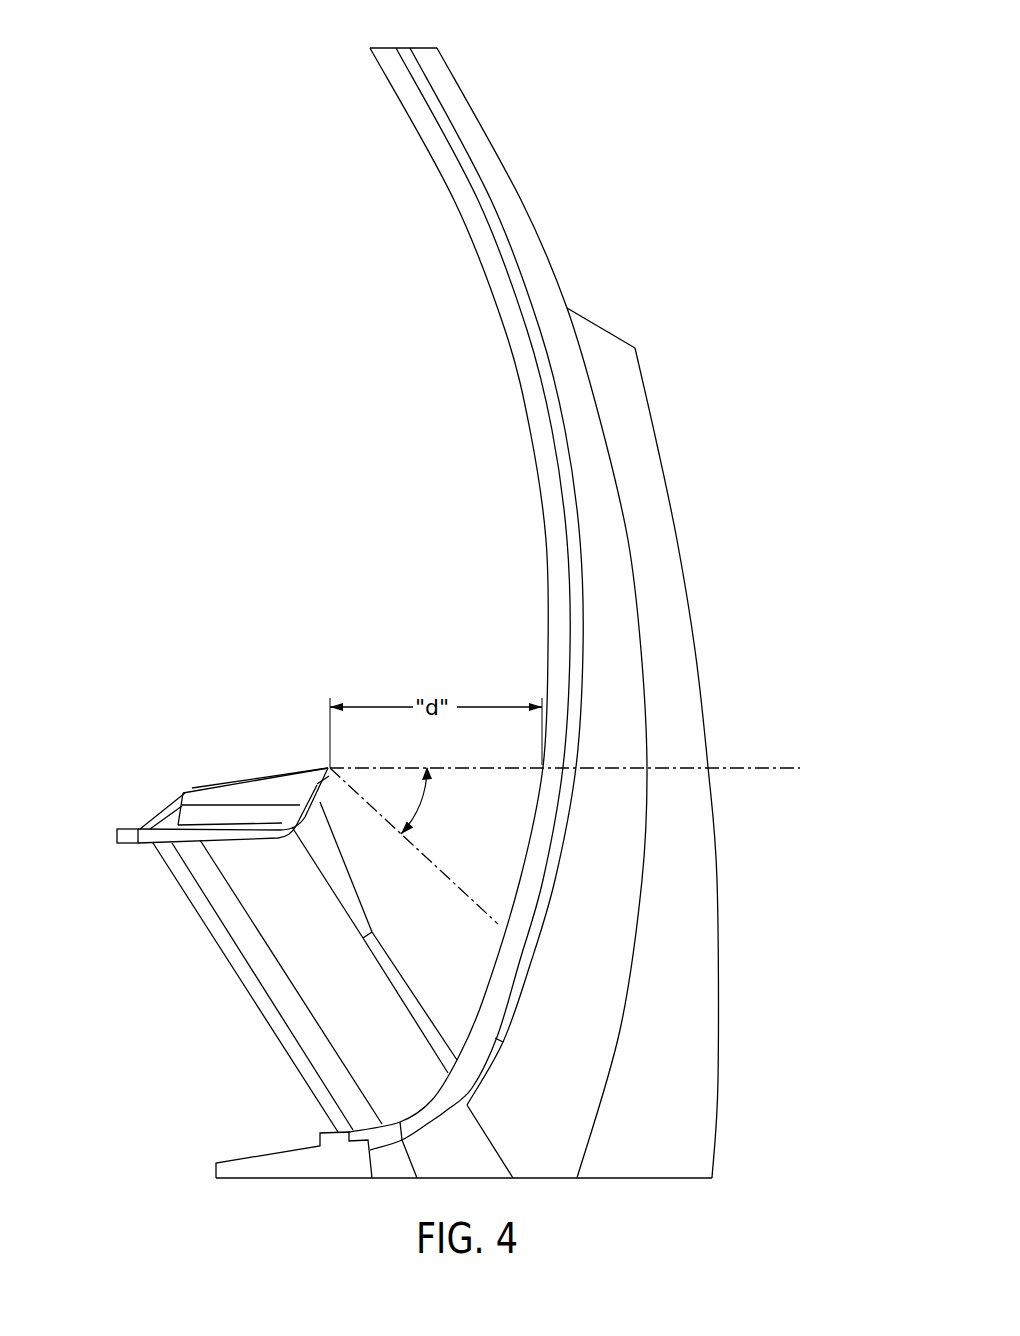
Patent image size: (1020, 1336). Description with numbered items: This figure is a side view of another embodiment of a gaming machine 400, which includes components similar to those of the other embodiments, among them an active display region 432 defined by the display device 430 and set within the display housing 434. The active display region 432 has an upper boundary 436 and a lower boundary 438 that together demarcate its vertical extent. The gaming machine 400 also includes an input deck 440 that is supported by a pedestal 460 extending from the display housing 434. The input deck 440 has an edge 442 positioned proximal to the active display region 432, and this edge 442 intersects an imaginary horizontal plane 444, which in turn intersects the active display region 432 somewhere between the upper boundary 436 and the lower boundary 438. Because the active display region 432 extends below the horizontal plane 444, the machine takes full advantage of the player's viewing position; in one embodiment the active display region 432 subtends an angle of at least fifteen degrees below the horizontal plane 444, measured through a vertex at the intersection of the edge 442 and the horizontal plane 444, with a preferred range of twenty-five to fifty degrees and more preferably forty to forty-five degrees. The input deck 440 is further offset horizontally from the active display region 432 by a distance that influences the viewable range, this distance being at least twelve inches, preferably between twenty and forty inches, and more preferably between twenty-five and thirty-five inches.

The gaming machine 400 is at (288, 455).
The display device 430 is at (371, 47).
The active display region 432 is at (509, 348).
The display housing 434 is at (676, 525).
The upper boundary 436 is at (398, 107).
The lower boundary 438 is at (503, 932).
The input deck 440 is at (128, 845).
The edge 442 is at (329, 766).
The imaginary horizontal plane 444 is at (743, 768).
The pedestal 460 is at (248, 988).